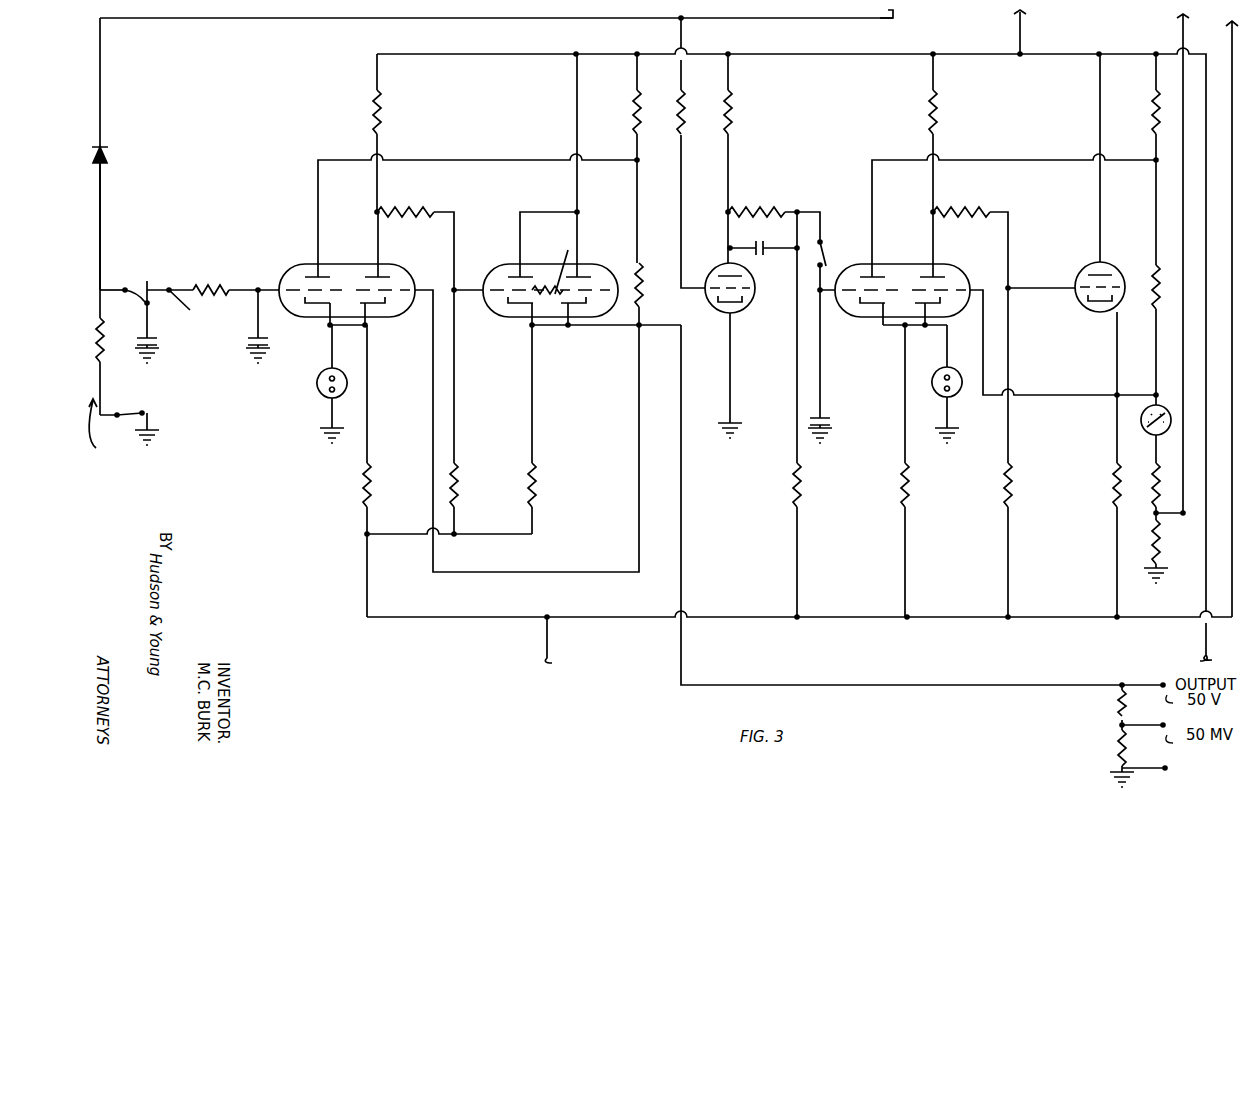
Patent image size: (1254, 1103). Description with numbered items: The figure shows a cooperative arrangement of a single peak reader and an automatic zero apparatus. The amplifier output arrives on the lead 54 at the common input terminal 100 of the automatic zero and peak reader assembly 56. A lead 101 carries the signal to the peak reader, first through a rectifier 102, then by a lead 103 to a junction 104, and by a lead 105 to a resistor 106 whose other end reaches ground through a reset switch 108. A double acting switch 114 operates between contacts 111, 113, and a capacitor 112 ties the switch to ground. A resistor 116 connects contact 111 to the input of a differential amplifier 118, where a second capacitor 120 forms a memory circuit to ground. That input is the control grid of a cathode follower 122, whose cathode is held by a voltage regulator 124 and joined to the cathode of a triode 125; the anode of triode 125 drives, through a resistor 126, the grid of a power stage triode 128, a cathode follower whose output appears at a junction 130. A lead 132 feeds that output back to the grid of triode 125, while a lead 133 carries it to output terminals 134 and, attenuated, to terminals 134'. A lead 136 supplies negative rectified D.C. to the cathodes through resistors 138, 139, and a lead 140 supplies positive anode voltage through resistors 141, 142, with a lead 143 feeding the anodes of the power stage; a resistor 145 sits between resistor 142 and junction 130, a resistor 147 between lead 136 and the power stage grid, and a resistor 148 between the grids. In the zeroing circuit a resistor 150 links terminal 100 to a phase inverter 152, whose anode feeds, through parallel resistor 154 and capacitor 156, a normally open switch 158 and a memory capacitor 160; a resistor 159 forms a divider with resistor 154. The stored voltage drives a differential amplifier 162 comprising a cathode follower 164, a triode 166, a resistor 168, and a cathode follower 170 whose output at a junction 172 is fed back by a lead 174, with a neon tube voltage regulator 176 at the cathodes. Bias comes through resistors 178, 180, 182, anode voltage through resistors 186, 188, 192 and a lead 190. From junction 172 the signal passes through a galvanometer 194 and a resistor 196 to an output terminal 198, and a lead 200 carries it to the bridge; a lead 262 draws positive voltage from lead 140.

The lead 54 is at (845, 20).
The automatic zero and peak reader assembly 56 is at (104, 425).
The common input terminal 100 is at (683, 26).
The lead 101 is at (450, 20).
The rectifier 102 is at (108, 155).
The lead 103 is at (102, 183).
The junction 104 is at (102, 288).
The lead 105 is at (102, 300).
The resistor 106 is at (104, 335).
The reset switch 108 is at (130, 408).
The contact 111 is at (180, 301).
The capacitor 112 is at (150, 330).
The contact 113 is at (160, 307).
The double acting switch 114 is at (150, 280).
The resistor 116 is at (212, 280).
The differential amplifier 118 is at (358, 252).
The second capacitor 120 is at (262, 330).
The cathode follower 122 is at (307, 260).
The voltage regulator 124 is at (316, 395).
The triode 125 is at (380, 305).
The resistor 126 is at (430, 205).
The power stage triode 128 is at (510, 254).
The junction 130 is at (636, 327).
The lead 132 is at (635, 533).
The lead 133 is at (1016, 680).
The output terminals 134 is at (1137, 692).
The output terminals 134' is at (1139, 742).
The lead 136 is at (546, 528).
The resistor 138 is at (365, 495).
The resistor 139 is at (540, 500).
The lead 140 is at (420, 50).
The resistor 141 is at (380, 105).
The resistor 142 is at (632, 102).
The lead 143 is at (575, 97).
The resistor 145 is at (636, 263).
The resistor 147 is at (460, 485).
The resistor 148 is at (568, 250).
The resistor 150 is at (684, 100).
The phase inverter 152 is at (738, 310).
The resistor 154 is at (768, 205).
The capacitor 156 is at (768, 252).
The normally open switch 158 is at (832, 238).
The resistor 159 is at (803, 480).
The capacitor 160 is at (824, 412).
The differential amplifier 162 is at (920, 252).
The cathode follower 164 is at (878, 328).
The triode 166 is at (928, 320).
The resistor 168 is at (978, 205).
The cathode follower 170 is at (1100, 263).
The junction 172 is at (1120, 390).
The lead 174 is at (1050, 393).
The neon tube voltage regulator 176 is at (940, 364).
The resistor 178 is at (910, 480).
The resistor 180 is at (1115, 471).
The resistor 182 is at (1013, 480).
The resistor 186 is at (734, 100).
The resistor 188 is at (938, 100).
The lead 190 is at (1098, 90).
The resistor 192 is at (1148, 90).
The galvanometer 194 is at (1140, 418).
The resistor 196 is at (1140, 458).
The output terminal 198 is at (1183, 520).
The lead 200 is at (1180, 43).
The lead 262 is at (1022, 30).